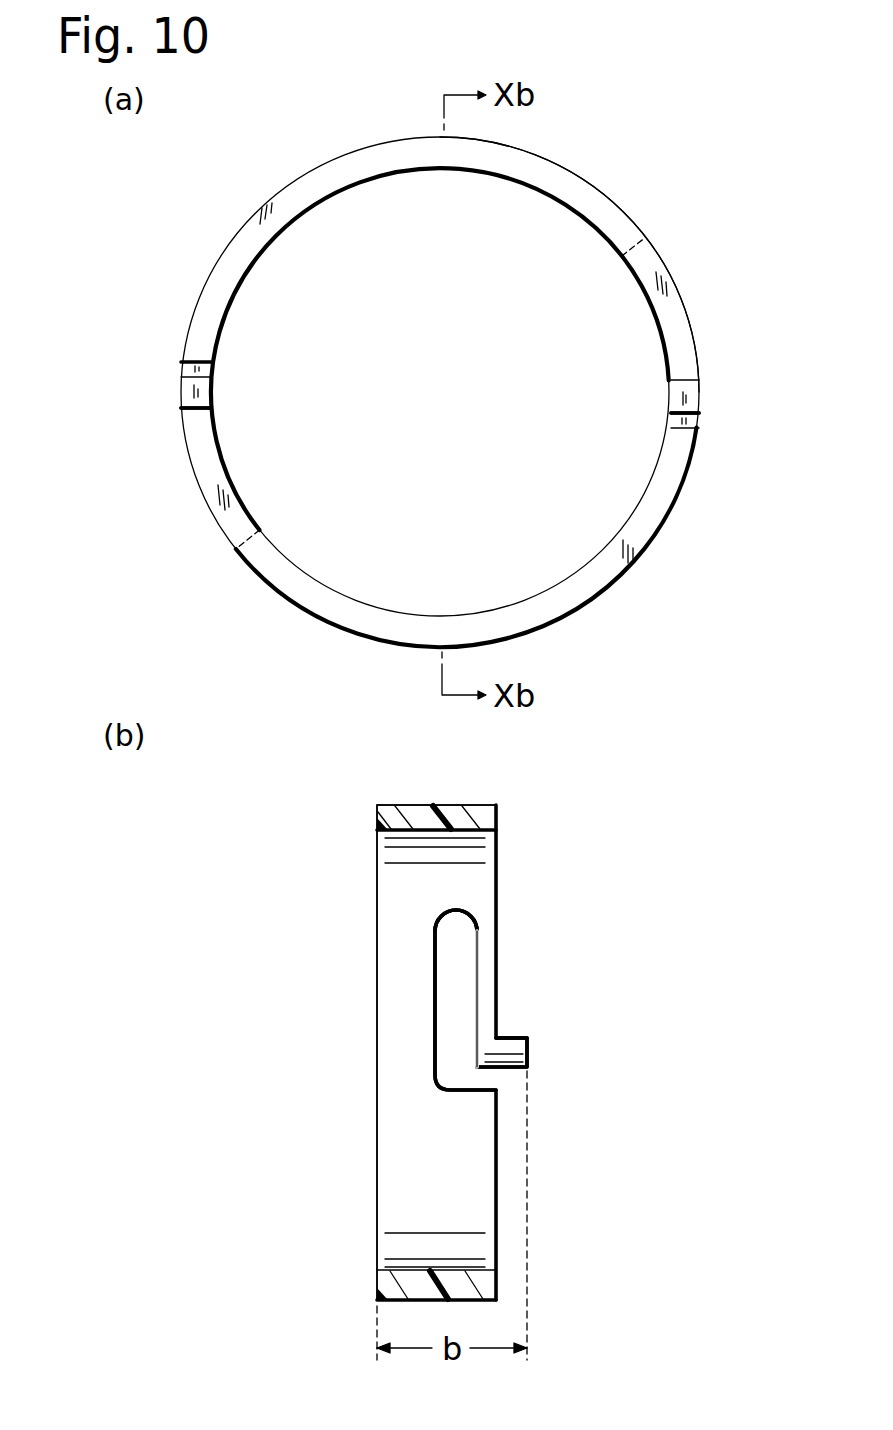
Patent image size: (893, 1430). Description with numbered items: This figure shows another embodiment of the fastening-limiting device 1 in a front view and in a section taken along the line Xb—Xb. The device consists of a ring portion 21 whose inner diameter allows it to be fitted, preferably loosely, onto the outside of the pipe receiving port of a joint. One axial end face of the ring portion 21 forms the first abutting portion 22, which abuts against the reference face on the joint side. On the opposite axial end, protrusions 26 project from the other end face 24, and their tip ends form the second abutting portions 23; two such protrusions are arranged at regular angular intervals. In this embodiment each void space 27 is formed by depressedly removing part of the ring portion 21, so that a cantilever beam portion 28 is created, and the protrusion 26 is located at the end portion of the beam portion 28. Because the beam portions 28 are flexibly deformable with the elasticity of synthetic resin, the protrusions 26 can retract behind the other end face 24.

The fastening-limiting device 1 is at (308, 166).
The ring portion 21 is at (598, 186).
The first abutting portion 22 is at (377, 815).
The second abutting portion 23 is at (697, 398).
The other end face 24 is at (497, 815).
The protrusion 26 is at (686, 378).
The void space 27 is at (467, 933).
The beam portion 28 is at (683, 302).